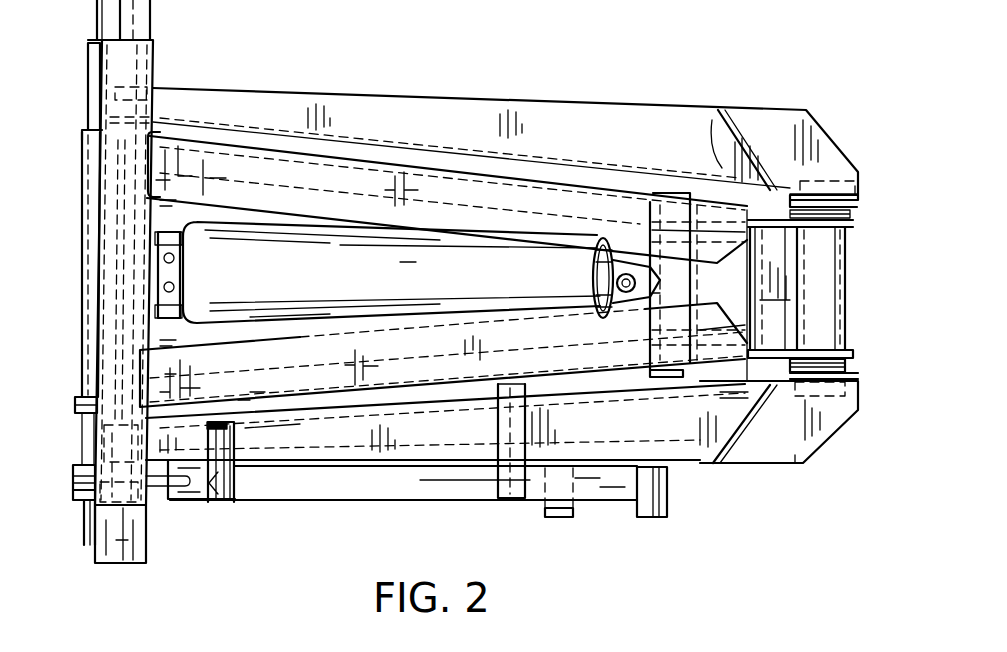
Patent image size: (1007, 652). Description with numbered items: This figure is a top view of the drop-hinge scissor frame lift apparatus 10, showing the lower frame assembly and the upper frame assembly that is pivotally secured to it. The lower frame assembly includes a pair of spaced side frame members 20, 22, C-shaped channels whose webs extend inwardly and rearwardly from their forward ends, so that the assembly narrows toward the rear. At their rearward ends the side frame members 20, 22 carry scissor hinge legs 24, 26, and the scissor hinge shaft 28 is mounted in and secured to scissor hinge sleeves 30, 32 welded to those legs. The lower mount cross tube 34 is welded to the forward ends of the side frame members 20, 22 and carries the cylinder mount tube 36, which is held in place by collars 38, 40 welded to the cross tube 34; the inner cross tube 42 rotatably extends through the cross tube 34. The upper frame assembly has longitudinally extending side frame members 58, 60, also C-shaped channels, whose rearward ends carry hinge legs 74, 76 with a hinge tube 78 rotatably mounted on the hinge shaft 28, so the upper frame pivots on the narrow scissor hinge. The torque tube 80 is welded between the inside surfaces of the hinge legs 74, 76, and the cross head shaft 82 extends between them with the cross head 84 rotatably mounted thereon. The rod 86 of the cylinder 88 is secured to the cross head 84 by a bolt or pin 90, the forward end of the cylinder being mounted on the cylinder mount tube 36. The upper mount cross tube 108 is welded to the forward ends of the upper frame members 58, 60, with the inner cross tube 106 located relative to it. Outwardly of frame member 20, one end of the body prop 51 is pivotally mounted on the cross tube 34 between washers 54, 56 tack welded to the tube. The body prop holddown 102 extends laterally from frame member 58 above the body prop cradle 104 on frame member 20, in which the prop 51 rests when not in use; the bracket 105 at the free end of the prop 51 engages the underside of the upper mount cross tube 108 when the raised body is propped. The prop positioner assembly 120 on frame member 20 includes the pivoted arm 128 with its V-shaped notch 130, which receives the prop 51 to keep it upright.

The drop-hinge scissor frame lift apparatus 10 is at (632, 64).
The side frame member 20 is at (733, 462).
The side frame member 22 is at (322, 95).
The scissor hinge leg 24 is at (850, 375).
The scissor hinge leg 26 is at (727, 118).
The scissor hinge shaft 28 is at (848, 364).
The scissor hinge sleeve 30 is at (806, 386).
The scissor hinge sleeve 32 is at (815, 196).
The lower mount cross tube 34 is at (88, 72).
The cylinder mount tube 36 is at (82, 330).
The collar 38 is at (77, 404).
The collar 40 is at (82, 134).
The inner cross tube 42 is at (86, 540).
The body prop 51 is at (409, 484).
The washer 54 is at (76, 468).
The washer 56 is at (76, 498).
The side frame member 58 is at (356, 354).
The side frame member 60 is at (347, 213).
The hinge leg 74 is at (852, 352).
The hinge leg 76 is at (852, 232).
The hinge tube 78 is at (856, 222).
The torque tube 80 is at (822, 286).
The cross head shaft 82 is at (738, 425).
The cross head 84 is at (697, 284).
The rod 86 is at (594, 283).
The cylinder 88 is at (419, 283).
The bolt or pin 90 is at (625, 273).
The body prop holddown 102 is at (510, 482).
The body prop cradle 104 is at (556, 518).
The bracket 105 is at (654, 518).
The inner cross tube 106 is at (122, 560).
The upper mount cross tube 108 is at (112, 262).
The prop positioner assembly 120 is at (250, 437).
The arm 128 is at (229, 504).
The V-shaped notch 130 is at (214, 499).